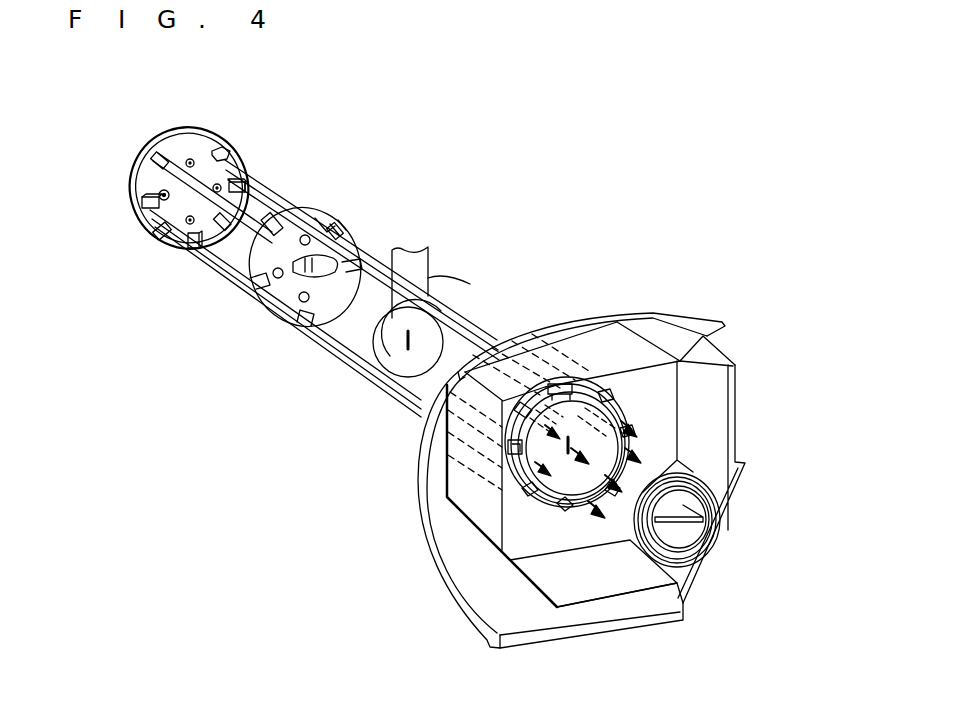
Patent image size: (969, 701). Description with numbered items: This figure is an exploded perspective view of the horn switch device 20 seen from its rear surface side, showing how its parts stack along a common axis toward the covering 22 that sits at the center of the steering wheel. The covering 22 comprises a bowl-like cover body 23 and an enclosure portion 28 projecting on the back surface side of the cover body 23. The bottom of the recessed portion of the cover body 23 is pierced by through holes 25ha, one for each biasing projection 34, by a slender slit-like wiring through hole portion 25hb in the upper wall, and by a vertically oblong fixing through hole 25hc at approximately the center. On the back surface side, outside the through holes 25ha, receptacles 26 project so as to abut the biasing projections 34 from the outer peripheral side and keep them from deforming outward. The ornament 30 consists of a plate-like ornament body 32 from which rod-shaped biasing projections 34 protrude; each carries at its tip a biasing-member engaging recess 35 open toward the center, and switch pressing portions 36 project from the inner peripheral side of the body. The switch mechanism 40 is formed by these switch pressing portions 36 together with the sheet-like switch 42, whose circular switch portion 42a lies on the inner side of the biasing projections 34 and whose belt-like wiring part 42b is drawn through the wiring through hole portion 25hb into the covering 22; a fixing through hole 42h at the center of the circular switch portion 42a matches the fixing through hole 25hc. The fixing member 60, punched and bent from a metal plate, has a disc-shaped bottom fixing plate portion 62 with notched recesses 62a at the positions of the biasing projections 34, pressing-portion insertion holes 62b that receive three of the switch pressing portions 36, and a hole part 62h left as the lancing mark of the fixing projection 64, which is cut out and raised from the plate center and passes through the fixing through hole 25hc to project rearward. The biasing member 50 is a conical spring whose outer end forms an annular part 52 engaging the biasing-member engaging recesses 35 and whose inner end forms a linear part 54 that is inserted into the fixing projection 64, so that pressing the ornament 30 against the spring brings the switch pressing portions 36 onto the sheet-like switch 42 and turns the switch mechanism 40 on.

The horn switch device 20 is at (508, 188).
The covering 22 is at (617, 443).
The cover body 23 is at (680, 378).
The through holes 25ha is at (550, 497).
The wiring through hole portion 25hb is at (578, 395).
The fixing through hole 25hc is at (634, 424).
The receptacles 26 is at (598, 445).
The enclosure portion 28 is at (735, 395).
The ornament 30 is at (180, 180).
The ornament body 32 is at (189, 147).
The biasing projections 34 is at (165, 156).
The biasing-member engaging recess 35 is at (222, 148).
The switch pressing portions 36 is at (140, 178).
The switch mechanism 40 is at (447, 255).
The sheet-like switch 42 is at (365, 285).
The circular switch portion 42a is at (432, 318).
The belt-like wiring part 42b is at (420, 282).
The fixing through hole 42h is at (410, 340).
The biasing member 50 is at (724, 532).
The annular part 52 is at (705, 500).
The linear part 54 is at (685, 527).
The fixing member 60 is at (321, 239).
The bottom fixing plate portion 62 is at (278, 300).
The notched recesses 62a is at (286, 212).
The pressing-portion insertion holes 62b is at (330, 205).
The hole part 62h is at (342, 244).
The fixing projection 64 is at (272, 277).